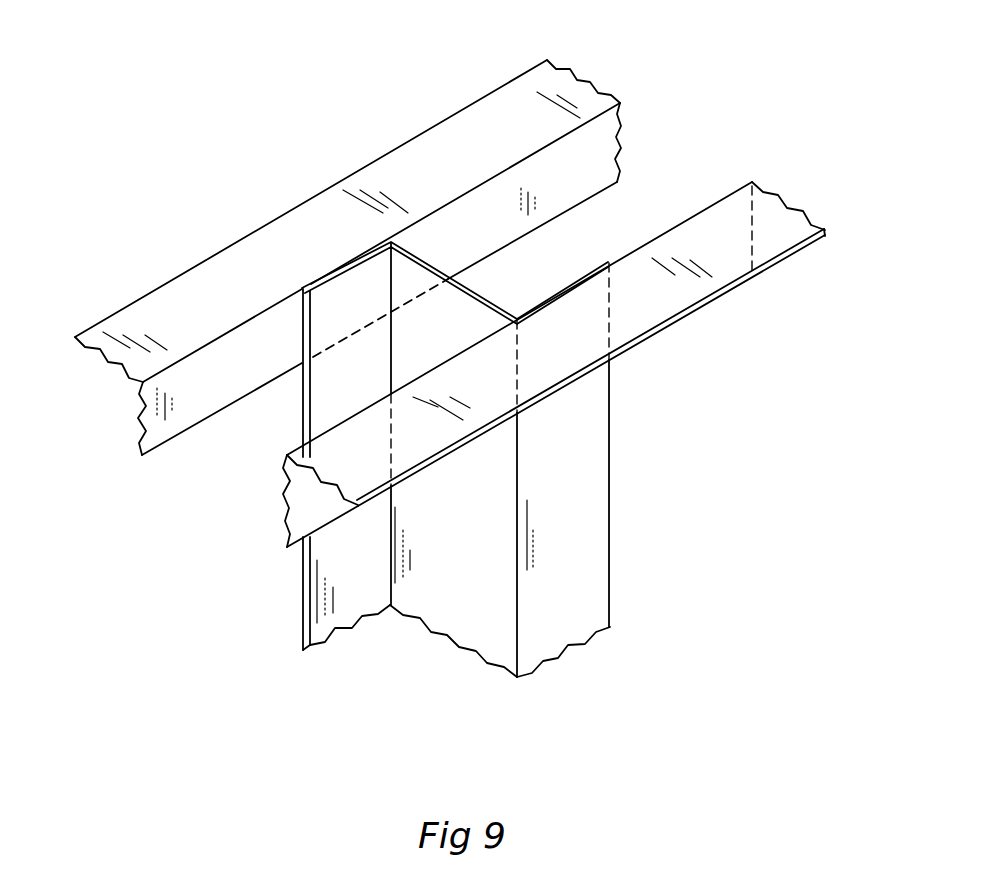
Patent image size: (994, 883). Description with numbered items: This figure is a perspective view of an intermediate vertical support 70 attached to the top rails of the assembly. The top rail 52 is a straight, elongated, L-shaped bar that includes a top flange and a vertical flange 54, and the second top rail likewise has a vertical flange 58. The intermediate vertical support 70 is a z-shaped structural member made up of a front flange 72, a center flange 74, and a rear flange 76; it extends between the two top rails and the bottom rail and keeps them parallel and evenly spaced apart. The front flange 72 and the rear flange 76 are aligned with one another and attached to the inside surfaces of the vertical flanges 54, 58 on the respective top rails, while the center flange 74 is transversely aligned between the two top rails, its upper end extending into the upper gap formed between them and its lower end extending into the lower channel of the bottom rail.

The top rail 52 is at (563, 70).
The vertical flange 54 is at (782, 200).
The vertical flange 58 is at (674, 179).
The intermediate vertical support 70 is at (499, 462).
The front flange 72 is at (614, 470).
The center flange 74 is at (433, 593).
The rear flange 76 is at (303, 403).